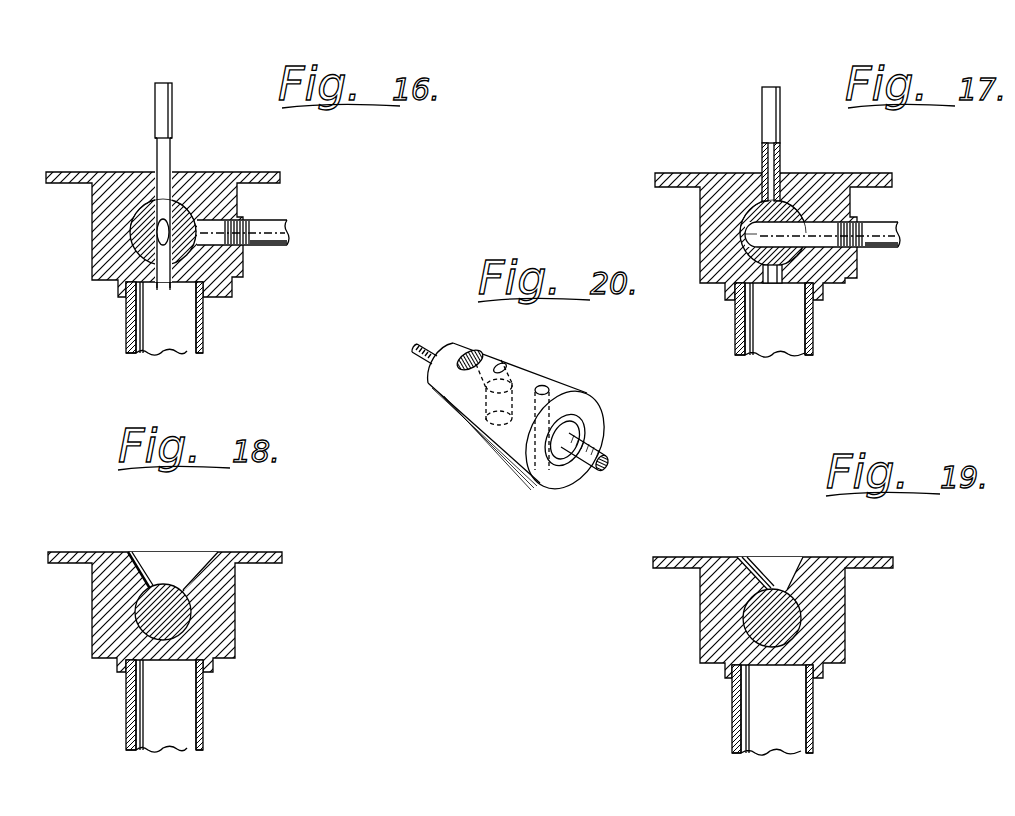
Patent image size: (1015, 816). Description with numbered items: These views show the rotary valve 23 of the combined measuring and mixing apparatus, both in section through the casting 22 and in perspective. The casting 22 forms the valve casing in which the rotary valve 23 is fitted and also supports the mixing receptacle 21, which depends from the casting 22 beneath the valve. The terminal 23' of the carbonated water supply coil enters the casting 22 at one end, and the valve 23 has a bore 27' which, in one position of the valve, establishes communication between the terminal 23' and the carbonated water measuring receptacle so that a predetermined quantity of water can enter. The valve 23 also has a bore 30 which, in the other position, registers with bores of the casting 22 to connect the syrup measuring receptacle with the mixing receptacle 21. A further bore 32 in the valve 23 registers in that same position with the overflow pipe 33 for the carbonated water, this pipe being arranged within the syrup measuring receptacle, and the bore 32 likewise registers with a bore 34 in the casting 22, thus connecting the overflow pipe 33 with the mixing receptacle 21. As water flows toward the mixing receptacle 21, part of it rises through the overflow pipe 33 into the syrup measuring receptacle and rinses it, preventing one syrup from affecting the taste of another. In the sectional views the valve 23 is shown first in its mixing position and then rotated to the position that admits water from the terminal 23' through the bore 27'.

In FIG. 16, the mixing receptacle 21 is at (183, 328).
In FIG. 17, the mixing receptacle 21 is at (815, 325).
In FIG. 18, the mixing receptacle 21 is at (163, 718).
In FIG. 19, the mixing receptacle 21 is at (780, 725).
In FIG. 16, the casting 22 is at (240, 277).
In FIG. 17, the casting 22 is at (712, 223).
In FIG. 18, the casting 22 is at (225, 625).
In FIG. 19, the casting 22 is at (820, 620).
In FIG. 20, the casting 22 is at (515, 422).
In FIG. 16, the rotary valve 23 is at (186, 200).
In FIG. 17, the rotary valve 23 is at (786, 207).
In FIG. 18, the rotary valve 23 is at (180, 572).
In FIG. 19, the rotary valve 23 is at (727, 618).
In FIG. 20, the rotary valve 23 is at (579, 416).
In FIG. 16, the terminal of the water supply pipe 23' is at (260, 215).
In FIG. 17, the terminal of the water supply pipe 23' is at (839, 221).
In FIG. 16, the bore 27' is at (122, 243).
In FIG. 17, the bore 27' is at (773, 270).
In FIG. 18, the bore 27' is at (203, 556).
In FIG. 19, the bore 27' is at (773, 557).
In FIG. 20, the bore 27' is at (488, 372).
In FIG. 20, the bore 30 is at (543, 388).
In FIG. 16, the bore 32 is at (166, 230).
In FIG. 17, the bore 32 is at (745, 238).
In FIG. 20, the bore 32 is at (507, 372).
In FIG. 16, the overflow pipe 33 is at (168, 113).
In FIG. 17, the overflow pipe 33 is at (772, 130).
In FIG. 16, the bore 34 is at (168, 283).
In FIG. 17, the bore 34 is at (775, 277).